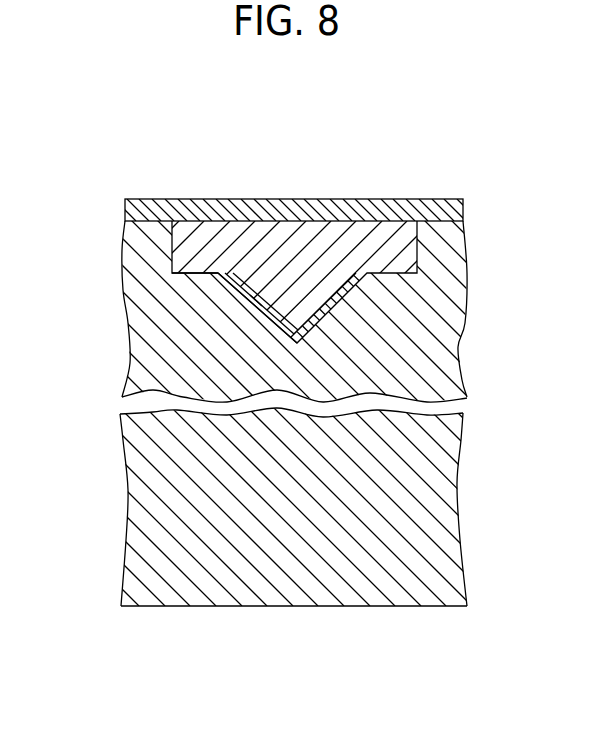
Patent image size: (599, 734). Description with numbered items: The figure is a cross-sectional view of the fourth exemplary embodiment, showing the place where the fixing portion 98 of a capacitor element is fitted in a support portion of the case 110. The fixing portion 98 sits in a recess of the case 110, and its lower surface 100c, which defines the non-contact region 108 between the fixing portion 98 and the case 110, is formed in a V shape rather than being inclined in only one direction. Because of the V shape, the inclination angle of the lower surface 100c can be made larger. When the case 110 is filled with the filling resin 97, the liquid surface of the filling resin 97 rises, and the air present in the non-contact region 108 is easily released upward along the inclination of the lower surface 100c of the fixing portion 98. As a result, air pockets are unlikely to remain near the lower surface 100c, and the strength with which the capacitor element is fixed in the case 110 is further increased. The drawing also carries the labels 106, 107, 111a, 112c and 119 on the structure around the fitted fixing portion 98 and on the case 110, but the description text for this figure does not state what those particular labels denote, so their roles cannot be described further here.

The filling resin 97 is at (362, 212).
The fixing portion 98 is at (335, 252).
The lower surface 100c is at (255, 301).
The groove 106 is at (335, 318).
The step portion 107 is at (202, 275).
The non-contact region 108 is at (260, 311).
The case 110 is at (450, 388).
The bonding layer 111a is at (390, 358).
The inner layer 112c is at (241, 293).
The bottom surface 119 is at (380, 606).